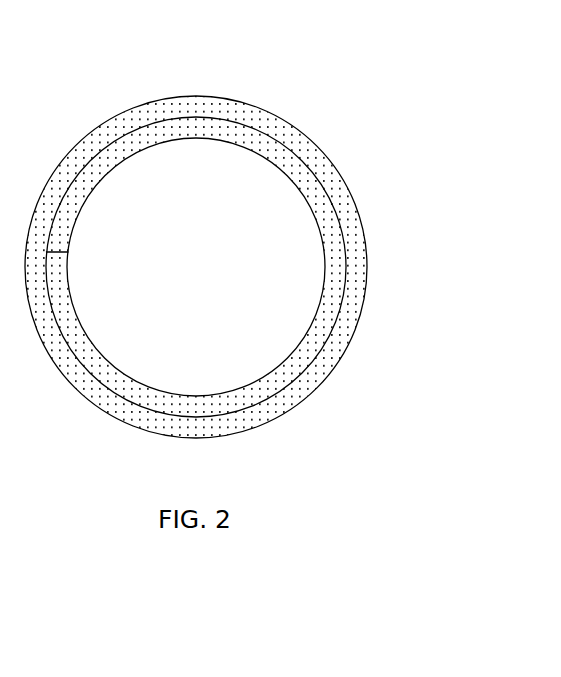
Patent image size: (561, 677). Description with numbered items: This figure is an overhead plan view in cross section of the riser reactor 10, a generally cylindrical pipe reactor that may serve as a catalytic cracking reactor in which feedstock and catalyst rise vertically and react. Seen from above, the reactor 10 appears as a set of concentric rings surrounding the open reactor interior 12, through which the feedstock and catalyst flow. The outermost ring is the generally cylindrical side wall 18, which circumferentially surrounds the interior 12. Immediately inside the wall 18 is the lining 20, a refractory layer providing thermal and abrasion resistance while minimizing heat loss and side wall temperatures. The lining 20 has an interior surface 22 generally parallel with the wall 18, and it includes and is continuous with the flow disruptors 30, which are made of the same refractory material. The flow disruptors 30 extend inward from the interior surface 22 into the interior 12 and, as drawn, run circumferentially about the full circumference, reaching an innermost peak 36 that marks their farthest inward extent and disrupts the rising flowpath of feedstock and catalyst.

The riser reactor 10 is at (192, 219).
The reactor interior 12 is at (206, 292).
The side wall 18 is at (110, 120).
The lining 20 is at (73, 160).
The interior surface 22 is at (65, 251).
The flow disruptor 30 is at (107, 162).
The innermost peak 36 is at (114, 373).